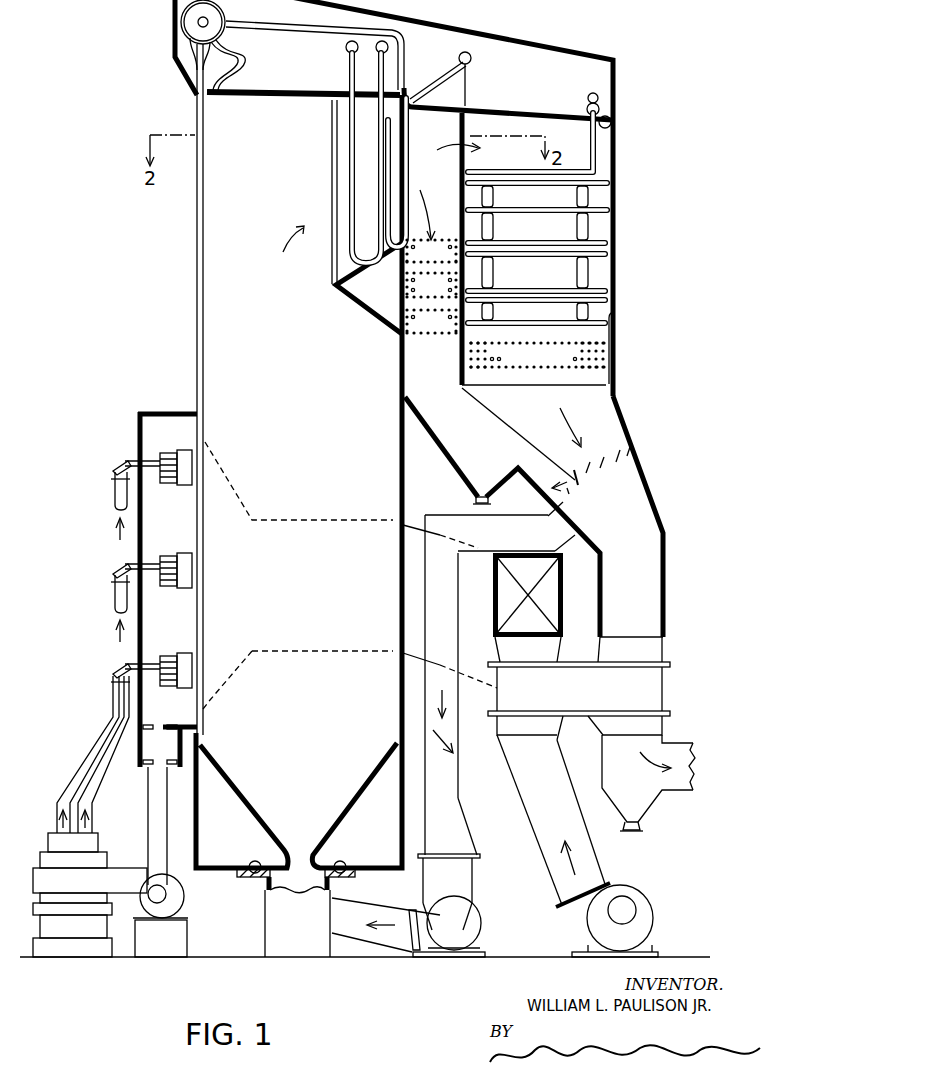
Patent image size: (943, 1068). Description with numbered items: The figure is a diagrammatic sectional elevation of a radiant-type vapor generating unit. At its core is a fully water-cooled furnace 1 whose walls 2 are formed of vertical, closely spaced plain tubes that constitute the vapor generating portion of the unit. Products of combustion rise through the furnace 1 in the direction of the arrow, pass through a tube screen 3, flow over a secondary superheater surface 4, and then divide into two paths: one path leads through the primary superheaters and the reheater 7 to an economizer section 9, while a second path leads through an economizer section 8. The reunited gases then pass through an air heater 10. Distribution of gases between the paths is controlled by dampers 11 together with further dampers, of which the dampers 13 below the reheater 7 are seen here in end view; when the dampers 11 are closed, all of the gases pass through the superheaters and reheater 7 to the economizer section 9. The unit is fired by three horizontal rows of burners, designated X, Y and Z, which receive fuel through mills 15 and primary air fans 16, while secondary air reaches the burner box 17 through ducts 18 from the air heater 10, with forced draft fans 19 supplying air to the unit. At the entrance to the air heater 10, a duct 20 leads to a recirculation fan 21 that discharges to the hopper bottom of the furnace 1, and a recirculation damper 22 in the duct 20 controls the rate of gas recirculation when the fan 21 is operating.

The furnace 1 is at (306, 409).
The walls 2 is at (205, 311).
The tube screen 3 is at (332, 142).
The secondary superheater surface 4 is at (379, 158).
The reheater 7 is at (538, 249).
The economizer section 8 is at (417, 337).
The economizer section 9 is at (537, 355).
The air heater 10 is at (576, 683).
The dampers 11 is at (563, 491).
The dampers 13 is at (596, 479).
The mills 15 is at (90, 816).
The primary air fans 16 is at (186, 892).
The burner box 17 is at (154, 589).
The ducts 18 is at (288, 652).
The forced draft fans 19 is at (577, 846).
The duct 20 is at (460, 786).
The recirculation fan 21 is at (482, 922).
The recirculation damper 22 is at (452, 752).